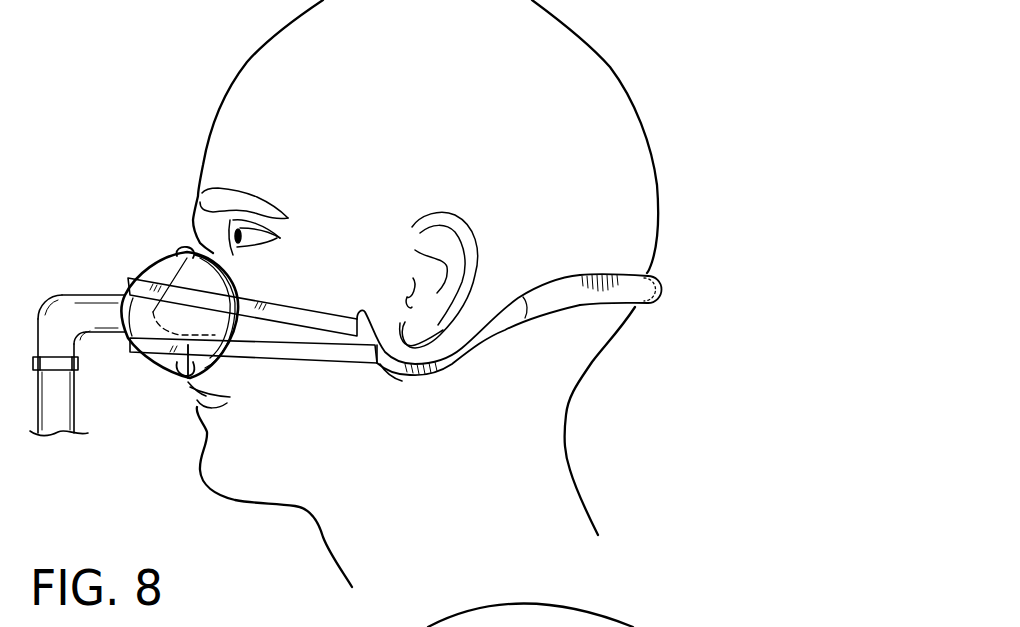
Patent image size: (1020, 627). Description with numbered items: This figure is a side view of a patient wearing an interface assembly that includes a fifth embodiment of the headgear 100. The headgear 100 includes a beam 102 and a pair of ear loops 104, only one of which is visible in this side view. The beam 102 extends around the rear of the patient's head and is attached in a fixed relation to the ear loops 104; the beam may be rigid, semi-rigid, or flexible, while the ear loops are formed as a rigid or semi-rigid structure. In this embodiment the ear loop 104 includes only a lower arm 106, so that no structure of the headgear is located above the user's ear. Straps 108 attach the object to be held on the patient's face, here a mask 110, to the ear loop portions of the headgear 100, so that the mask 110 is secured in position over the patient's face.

The headgear 100 is at (683, 108).
The beam 102 is at (659, 290).
The ear loop 104 is at (432, 373).
The lower arm 106 is at (390, 372).
The straps 108 is at (278, 362).
The mask 110 is at (146, 273).